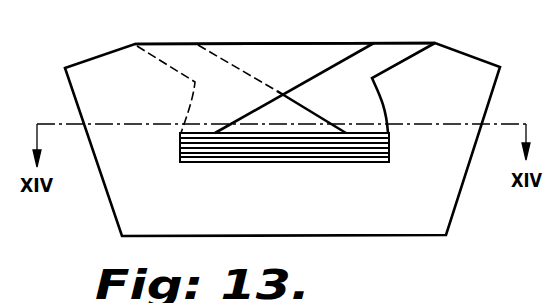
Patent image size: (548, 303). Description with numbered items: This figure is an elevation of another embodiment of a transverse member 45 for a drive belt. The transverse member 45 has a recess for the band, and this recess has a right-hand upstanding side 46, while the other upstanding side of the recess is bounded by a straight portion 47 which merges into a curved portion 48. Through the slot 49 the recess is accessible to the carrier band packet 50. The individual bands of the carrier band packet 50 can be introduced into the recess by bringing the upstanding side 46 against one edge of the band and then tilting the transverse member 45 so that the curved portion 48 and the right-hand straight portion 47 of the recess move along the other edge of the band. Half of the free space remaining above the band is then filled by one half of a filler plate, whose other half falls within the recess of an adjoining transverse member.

The transverse member 45 is at (414, 200).
The right-hand upstanding side 46 is at (180, 148).
The straight portion 47 is at (389, 143).
The curved portion 48 is at (387, 103).
The slot 49 is at (382, 52).
The carrier band packet 50 is at (324, 143).